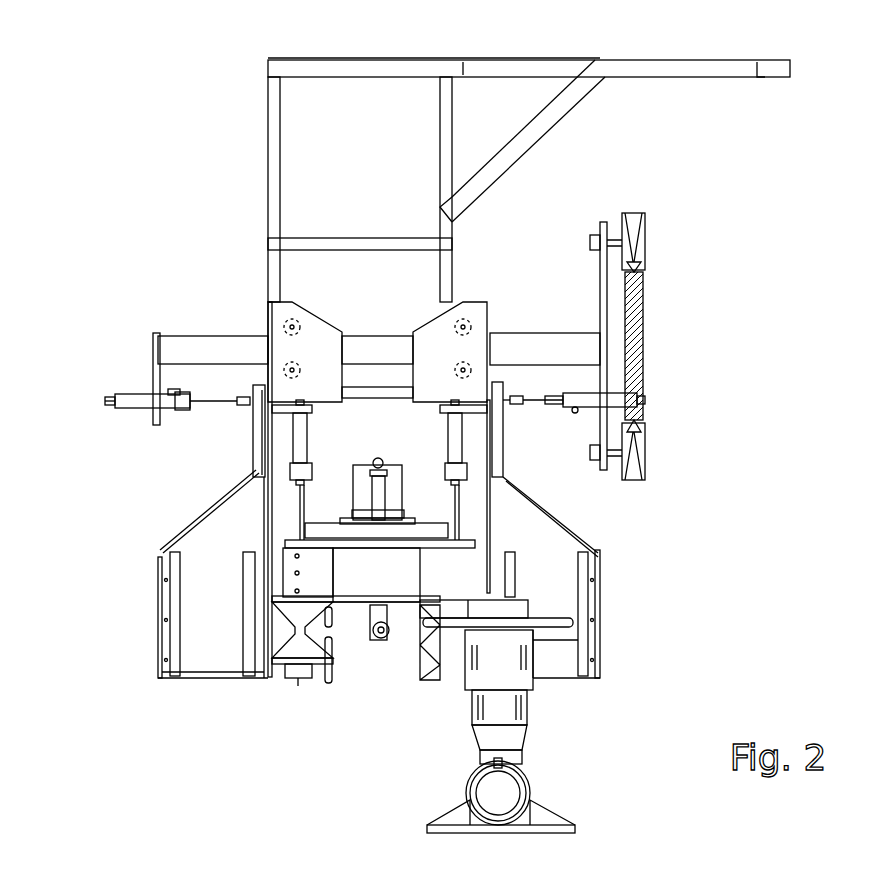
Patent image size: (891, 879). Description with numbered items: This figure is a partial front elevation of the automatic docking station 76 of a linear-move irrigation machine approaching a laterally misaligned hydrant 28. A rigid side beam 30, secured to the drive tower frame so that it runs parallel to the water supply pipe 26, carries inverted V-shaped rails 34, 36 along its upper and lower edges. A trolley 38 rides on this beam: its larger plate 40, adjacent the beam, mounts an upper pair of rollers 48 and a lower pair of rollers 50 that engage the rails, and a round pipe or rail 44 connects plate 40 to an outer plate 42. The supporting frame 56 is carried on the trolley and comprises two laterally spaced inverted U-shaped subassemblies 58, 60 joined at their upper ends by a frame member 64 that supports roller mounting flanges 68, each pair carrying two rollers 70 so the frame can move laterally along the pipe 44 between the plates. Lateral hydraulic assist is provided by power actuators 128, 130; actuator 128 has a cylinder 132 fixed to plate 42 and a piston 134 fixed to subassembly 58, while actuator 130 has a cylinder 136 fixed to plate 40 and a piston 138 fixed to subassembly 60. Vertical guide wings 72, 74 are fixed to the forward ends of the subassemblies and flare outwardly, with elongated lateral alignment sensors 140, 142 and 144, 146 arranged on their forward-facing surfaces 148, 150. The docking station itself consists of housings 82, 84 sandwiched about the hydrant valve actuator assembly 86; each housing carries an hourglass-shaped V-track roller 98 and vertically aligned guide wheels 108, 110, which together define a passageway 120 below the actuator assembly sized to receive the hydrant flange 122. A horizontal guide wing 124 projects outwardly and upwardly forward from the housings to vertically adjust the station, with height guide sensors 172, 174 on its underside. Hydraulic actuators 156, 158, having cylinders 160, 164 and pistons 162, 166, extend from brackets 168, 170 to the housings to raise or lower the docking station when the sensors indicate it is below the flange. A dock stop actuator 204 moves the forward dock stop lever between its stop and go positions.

The water supply pipe 26 is at (496, 792).
The hydrant 28 is at (464, 712).
The side beam 30 is at (645, 336).
The upper V-shaped rail 34 is at (648, 269).
The lower V-shaped rail 36 is at (646, 426).
The trolley 38 is at (535, 330).
The larger plate 40 is at (607, 285).
The plate 42 is at (153, 370).
The pipe or rail 44 is at (215, 350).
The upper pair of rollers 48 is at (649, 217).
The lower pair of rollers 50 is at (656, 460).
The ADS supporting frame 56 is at (250, 428).
The inverted U-shaped subassembly 58 is at (250, 468).
The inverted U-shaped subassembly 60 is at (508, 450).
The frame member 64 is at (378, 392).
The roller mounting flange 68 is at (422, 322).
The roller 70 is at (300, 330).
The forward guide wing 72 is at (578, 522).
The forward guide wing 74 is at (193, 545).
The docking station 76 is at (322, 705).
The housing 82 is at (436, 682).
The housing 84 is at (320, 692).
The hydrant valve actuator assembly 86 is at (404, 487).
The V-track roller 98 is at (288, 632).
The guide wheel 108 is at (335, 630).
The guide wheel 110 is at (330, 682).
The passageway 120 is at (383, 642).
The hydrant flange 122 is at (556, 625).
The forward horizontal guide wing 124 is at (356, 548).
The power actuator 128 is at (137, 420).
The power actuator 130 is at (571, 395).
The cylinder 132 is at (130, 396).
The piston 134 is at (200, 400).
The cylinder 136 is at (593, 394).
The piston 138 is at (565, 409).
The lateral alignment sensor 140 is at (600, 595).
The lateral alignment sensor 142 is at (517, 572).
The lateral alignment sensor 144 is at (160, 637).
The lateral alignment sensor 146 is at (244, 612).
The forward-facing surface 148 is at (560, 665).
The forward-facing surface 150 is at (198, 680).
The hydraulic actuator 156 is at (312, 432).
The hydraulic actuator 158 is at (452, 432).
The cylinder 160 is at (310, 470).
The piston 162 is at (272, 497).
The cylinder 164 is at (462, 442).
The piston 166 is at (454, 514).
The bracket 168 is at (280, 405).
The bracket 170 is at (470, 412).
The height guide sensor 172 is at (333, 565).
The height guide sensor 174 is at (420, 594).
The dock stop actuator 204 is at (390, 487).